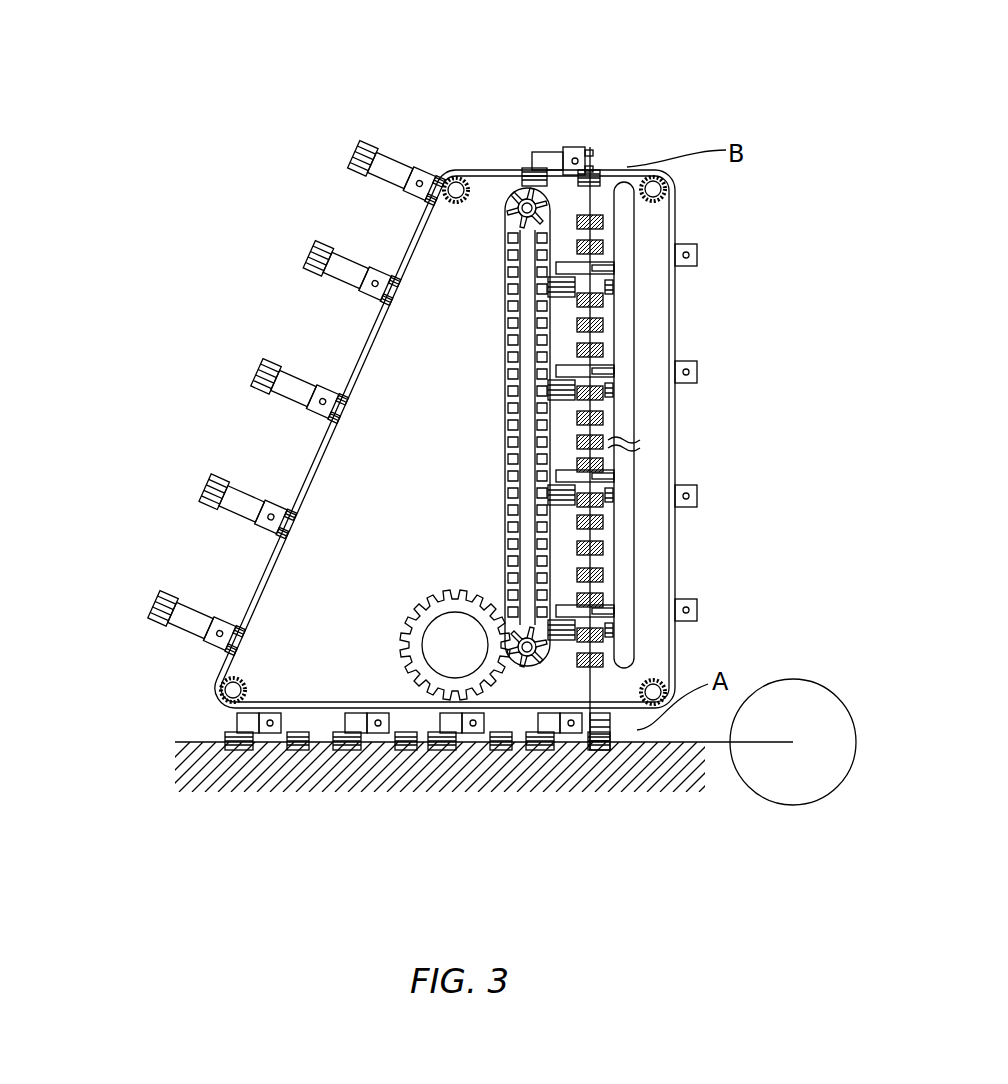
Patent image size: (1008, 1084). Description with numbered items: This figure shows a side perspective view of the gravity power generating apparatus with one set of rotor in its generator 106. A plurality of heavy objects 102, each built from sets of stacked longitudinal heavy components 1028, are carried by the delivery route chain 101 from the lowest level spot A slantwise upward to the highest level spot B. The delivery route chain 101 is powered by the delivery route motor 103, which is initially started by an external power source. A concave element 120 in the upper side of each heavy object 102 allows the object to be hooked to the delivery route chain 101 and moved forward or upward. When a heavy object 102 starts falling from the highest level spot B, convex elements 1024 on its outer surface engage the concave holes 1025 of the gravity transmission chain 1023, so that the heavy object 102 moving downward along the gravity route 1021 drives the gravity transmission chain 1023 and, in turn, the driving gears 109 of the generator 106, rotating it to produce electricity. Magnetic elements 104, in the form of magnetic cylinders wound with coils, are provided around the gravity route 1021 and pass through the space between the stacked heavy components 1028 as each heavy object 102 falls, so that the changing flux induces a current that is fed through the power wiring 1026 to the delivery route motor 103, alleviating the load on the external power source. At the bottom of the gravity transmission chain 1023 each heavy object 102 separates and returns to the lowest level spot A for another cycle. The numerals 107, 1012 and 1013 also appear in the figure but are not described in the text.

The delivery route chain 101 is at (417, 230).
The heavy object 102 is at (556, 150).
The delivery route motor 103 is at (765, 770).
The magnetic element 104 is at (672, 327).
The generator 106 is at (462, 648).
The spring 107 is at (608, 224).
The driving gear 109 is at (405, 657).
The concave element 120 is at (556, 492).
The mounting block 1012 is at (275, 520).
The fixing bracket 1013 is at (690, 506).
The gravity route 1021 is at (582, 212).
The gravity transmission chain 1023 is at (530, 407).
The convex element 1024 is at (522, 168).
The concave hole 1025 is at (540, 240).
The power wiring 1026 is at (645, 742).
The stacked longitudinal heavy component 1028 is at (362, 192).